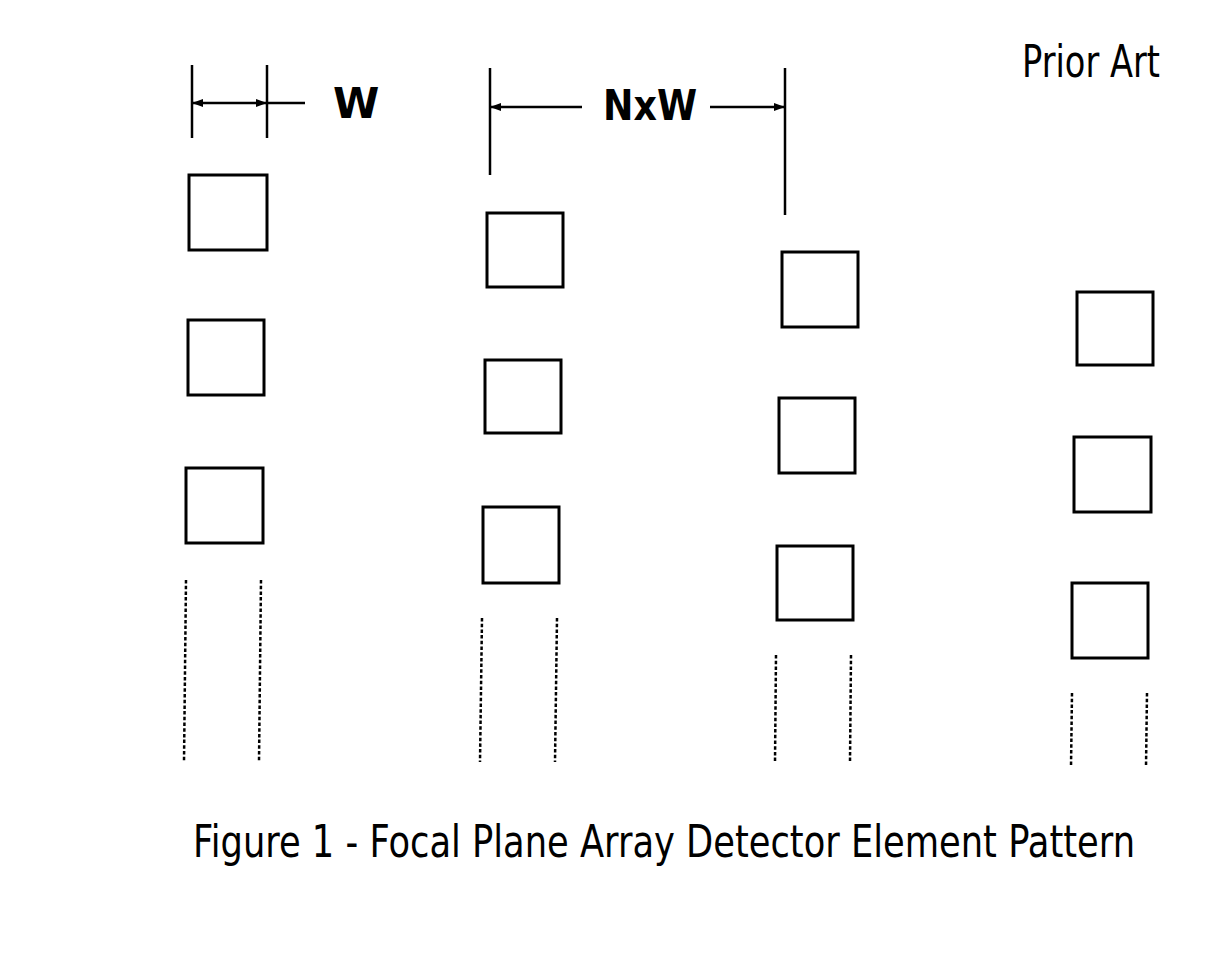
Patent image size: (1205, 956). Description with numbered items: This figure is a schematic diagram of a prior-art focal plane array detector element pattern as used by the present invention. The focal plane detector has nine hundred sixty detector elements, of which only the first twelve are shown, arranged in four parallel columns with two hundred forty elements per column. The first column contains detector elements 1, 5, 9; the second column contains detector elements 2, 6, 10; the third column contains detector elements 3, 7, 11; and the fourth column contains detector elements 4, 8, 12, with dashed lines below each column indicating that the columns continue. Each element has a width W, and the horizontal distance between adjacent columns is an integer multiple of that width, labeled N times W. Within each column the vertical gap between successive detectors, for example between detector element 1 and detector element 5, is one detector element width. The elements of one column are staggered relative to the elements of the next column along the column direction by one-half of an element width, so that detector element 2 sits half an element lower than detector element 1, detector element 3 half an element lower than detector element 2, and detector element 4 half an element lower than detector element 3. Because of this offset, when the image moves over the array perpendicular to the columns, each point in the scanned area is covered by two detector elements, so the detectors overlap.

The detector element 1 is at (228, 212).
The detector element 2 is at (525, 250).
The detector element 3 is at (820, 289).
The detector element 4 is at (1115, 328).
The detector element 5 is at (226, 357).
The detector element 6 is at (523, 396).
The detector element 7 is at (817, 435).
The detector element 8 is at (1112, 474).
The detector element 9 is at (224, 505).
The detector element 10 is at (521, 545).
The detector element 11 is at (815, 583).
The detector element 12 is at (1110, 620).